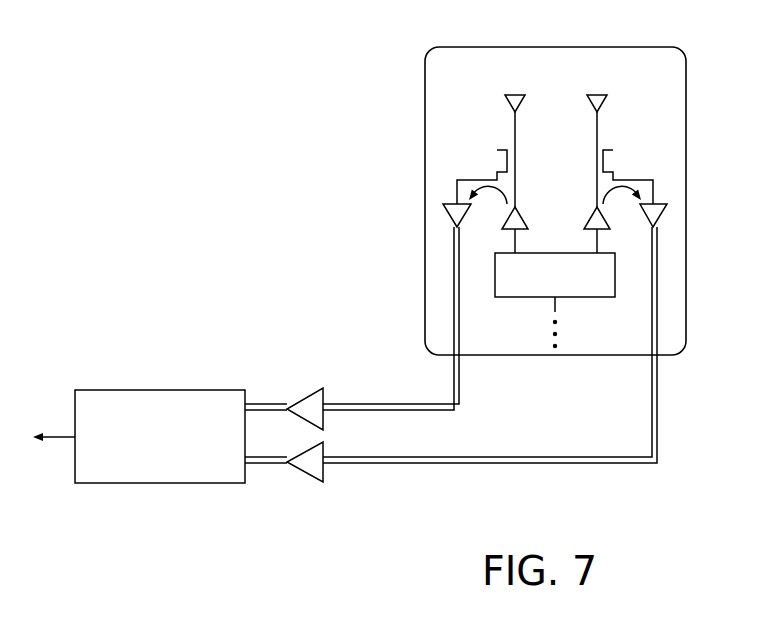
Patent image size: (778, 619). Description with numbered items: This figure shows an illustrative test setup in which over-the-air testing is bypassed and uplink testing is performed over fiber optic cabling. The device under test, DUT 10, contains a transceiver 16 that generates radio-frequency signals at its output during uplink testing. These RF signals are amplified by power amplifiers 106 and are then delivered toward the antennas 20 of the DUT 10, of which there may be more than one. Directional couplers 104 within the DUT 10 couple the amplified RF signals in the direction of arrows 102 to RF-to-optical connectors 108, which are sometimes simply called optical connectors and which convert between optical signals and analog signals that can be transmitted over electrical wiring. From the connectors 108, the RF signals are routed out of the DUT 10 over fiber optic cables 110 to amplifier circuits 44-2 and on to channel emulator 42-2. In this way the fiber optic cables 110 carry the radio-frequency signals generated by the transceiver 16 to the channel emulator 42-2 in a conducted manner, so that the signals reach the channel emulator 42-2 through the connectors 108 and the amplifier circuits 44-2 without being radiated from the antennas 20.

The DUT 10 is at (430, 42).
The antennas 20 is at (597, 93).
The directional couplers 104 is at (497, 135).
The arrows 102 is at (610, 179).
The power amplifiers 106 is at (583, 217).
The transceiver 16 is at (520, 297).
The RF-to-optical connectors 108 is at (452, 220).
The fiber optic cables 110 is at (500, 457).
The amplifier circuits 44-2 is at (311, 392).
The channel emulator 42-2 is at (172, 390).